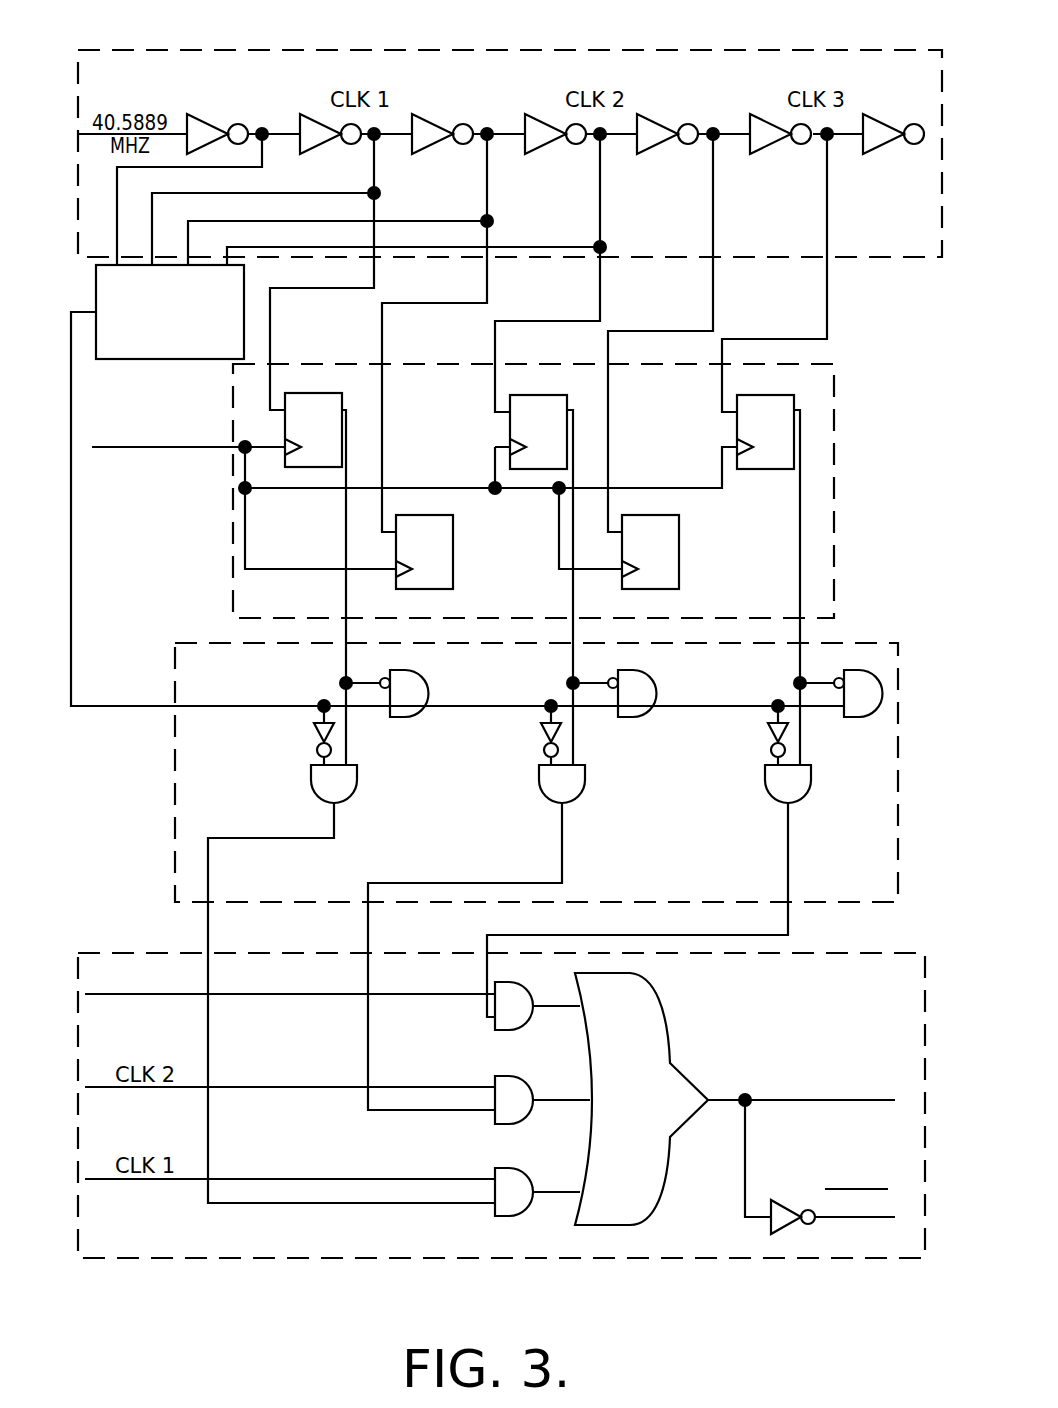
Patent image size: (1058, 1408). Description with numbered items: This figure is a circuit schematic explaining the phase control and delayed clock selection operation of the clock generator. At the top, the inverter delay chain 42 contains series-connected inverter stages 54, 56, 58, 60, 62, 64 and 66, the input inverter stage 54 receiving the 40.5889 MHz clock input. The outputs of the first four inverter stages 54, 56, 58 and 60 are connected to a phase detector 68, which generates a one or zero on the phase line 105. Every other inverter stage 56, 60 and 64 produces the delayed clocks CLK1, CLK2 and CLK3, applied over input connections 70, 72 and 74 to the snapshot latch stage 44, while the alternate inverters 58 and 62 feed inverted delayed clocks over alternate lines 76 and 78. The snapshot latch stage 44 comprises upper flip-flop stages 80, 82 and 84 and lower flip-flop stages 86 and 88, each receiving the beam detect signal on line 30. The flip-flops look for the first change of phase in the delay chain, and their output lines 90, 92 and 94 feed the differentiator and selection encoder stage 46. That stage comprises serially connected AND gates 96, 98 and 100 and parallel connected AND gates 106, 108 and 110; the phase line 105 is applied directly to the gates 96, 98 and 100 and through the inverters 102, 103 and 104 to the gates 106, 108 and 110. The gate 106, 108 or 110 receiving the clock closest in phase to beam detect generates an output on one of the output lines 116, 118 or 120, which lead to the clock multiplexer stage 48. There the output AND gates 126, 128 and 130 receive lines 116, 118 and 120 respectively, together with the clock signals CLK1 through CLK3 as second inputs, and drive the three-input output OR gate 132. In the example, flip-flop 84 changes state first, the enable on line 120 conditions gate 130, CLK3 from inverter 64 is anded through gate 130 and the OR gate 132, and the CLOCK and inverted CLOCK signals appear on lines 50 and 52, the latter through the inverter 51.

The inverter delay chain 42 is at (648, 50).
The input inverter stage 54 is at (197, 112).
The inverter stage 56 is at (309, 112).
The inverter stage 58 is at (431, 112).
The inverter stage 60 is at (544, 152).
The inverter stage 62 is at (654, 112).
The inverter stage 64 is at (767, 152).
The inverter stage 66 is at (880, 112).
The phase detector 68 is at (175, 362).
The input connection 70 is at (376, 300).
The input connection 72 is at (602, 300).
The input connection 74 is at (829, 300).
The alternate line 76 is at (489, 300).
The alternate line 78 is at (715, 300).
The snapshot latch stage 44 is at (355, 364).
The beam detect signal line 30 is at (160, 455).
The upper flip-flop stage 80 is at (300, 393).
The upper flip-flop stage 82 is at (525, 395).
The upper flip-flop stage 84 is at (751, 395).
The lower flip-flop stage 86 is at (412, 515).
The lower flip-flop stage 88 is at (636, 515).
The flip-flop output line 90 is at (350, 455).
The flip-flop output line 92 is at (577, 455).
The flip-flop output line 94 is at (803, 525).
The differentiator and selection encoder stage 46 is at (440, 643).
The serially connected AND gate 96 is at (425, 672).
The serially connected AND gate 98 is at (655, 672).
The serially connected AND gate 100 is at (850, 670).
The inverter 102 is at (317, 748).
The inverter 103 is at (544, 748).
The inverter 104 is at (771, 748).
The phase line 105 is at (157, 708).
The parallel connected AND gate 106 is at (358, 783).
The parallel connected AND gate 108 is at (586, 783).
The parallel connected AND gate 110 is at (812, 783).
The output line 116 is at (210, 935).
The output line 118 is at (370, 935).
The output line 120 is at (790, 935).
The clock multiplexer stage 48 is at (148, 953).
The output AND gate 126 is at (515, 1218).
The output AND gate 128 is at (510, 1126).
The output AND gate 130 is at (510, 1032).
The output OR gate 132 is at (660, 1020).
The CLOCK output line 50 is at (757, 1098).
The inverter 51 is at (778, 1200).
The inverted CLOCK output line 52 is at (824, 1220).